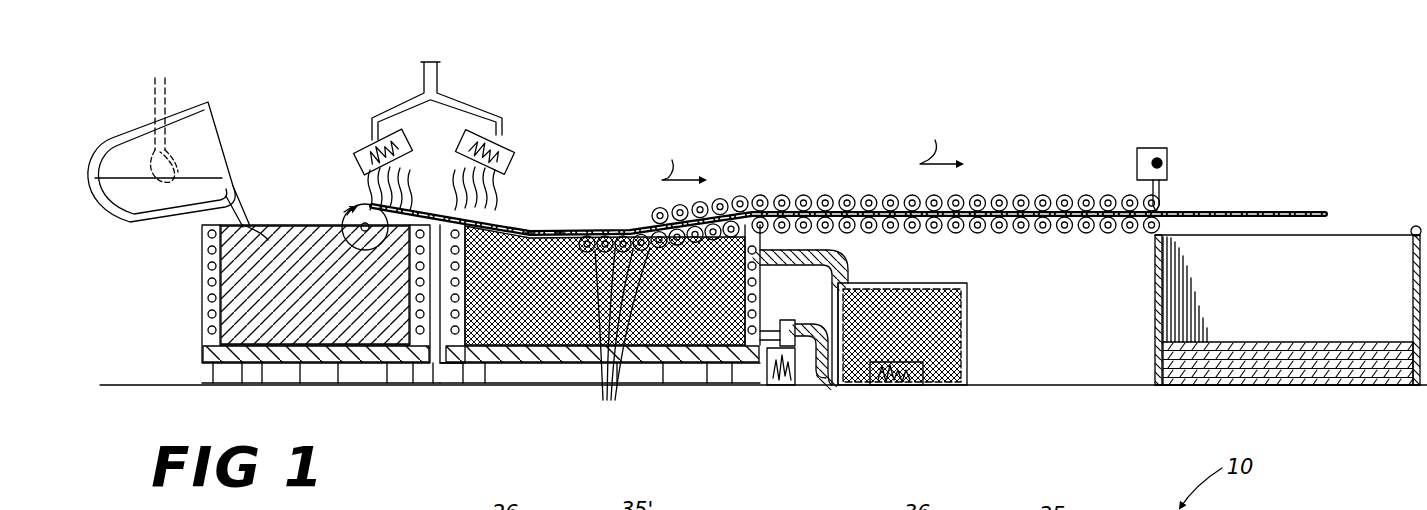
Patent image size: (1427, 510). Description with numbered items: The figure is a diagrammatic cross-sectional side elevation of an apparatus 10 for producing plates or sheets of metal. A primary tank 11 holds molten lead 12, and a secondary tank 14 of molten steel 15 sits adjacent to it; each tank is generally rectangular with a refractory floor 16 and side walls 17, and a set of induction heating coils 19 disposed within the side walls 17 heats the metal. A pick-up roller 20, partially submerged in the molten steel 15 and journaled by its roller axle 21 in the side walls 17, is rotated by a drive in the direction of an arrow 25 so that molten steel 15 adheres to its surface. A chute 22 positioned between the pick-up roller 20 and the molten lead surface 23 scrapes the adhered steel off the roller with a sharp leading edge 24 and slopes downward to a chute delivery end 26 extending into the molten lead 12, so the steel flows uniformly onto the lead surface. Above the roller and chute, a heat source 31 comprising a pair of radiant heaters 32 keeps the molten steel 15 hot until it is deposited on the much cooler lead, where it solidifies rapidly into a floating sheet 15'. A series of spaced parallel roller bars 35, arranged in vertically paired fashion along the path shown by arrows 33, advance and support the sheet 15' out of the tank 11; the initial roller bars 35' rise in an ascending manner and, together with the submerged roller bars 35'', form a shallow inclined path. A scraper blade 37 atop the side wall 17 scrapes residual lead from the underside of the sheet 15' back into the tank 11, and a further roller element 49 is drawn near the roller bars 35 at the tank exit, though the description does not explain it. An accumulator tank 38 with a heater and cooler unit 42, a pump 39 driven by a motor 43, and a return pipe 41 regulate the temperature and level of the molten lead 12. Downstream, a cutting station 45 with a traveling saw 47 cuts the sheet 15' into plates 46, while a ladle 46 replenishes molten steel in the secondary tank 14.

The apparatus 10 is at (668, 104).
The primary tank 11 is at (668, 364).
The molten lead 12 is at (585, 320).
The secondary tank 14 is at (334, 378).
The molten steel 15 is at (315, 278).
The solidified sheet of steel 15' is at (848, 193).
The floor 16 is at (270, 364).
The side walls 17 is at (205, 330).
The induction heating coils 19 is at (205, 262).
The pick-up roller 20 is at (345, 255).
The roller axle 21 is at (295, 245).
The chute 22 is at (512, 228).
The molten lead surface 23 is at (562, 232).
The sharp leading edge 24 is at (440, 212).
The arrow 25 is at (345, 203).
The chute delivery end 26 is at (530, 231).
The heat source 31 is at (452, 88).
The radiant heaters 32 is at (370, 140).
The arrows 33 is at (812, 149).
The roller bars 35 is at (945, 175).
The initial roller bars 35' is at (708, 180).
The submerged roller bars 35'' is at (659, 319).
The scraper blade 37 is at (775, 243).
The accumulator tank 38 is at (968, 330).
The pump 39 is at (788, 320).
The return pipe 41 is at (848, 265).
The heater and cooler unit 42 is at (905, 382).
The motor 43 is at (772, 386).
The cutting station 45 is at (1258, 194).
The plates 46 is at (108, 138).
The traveling saw 47 is at (1160, 148).
The roller 49 is at (795, 200).